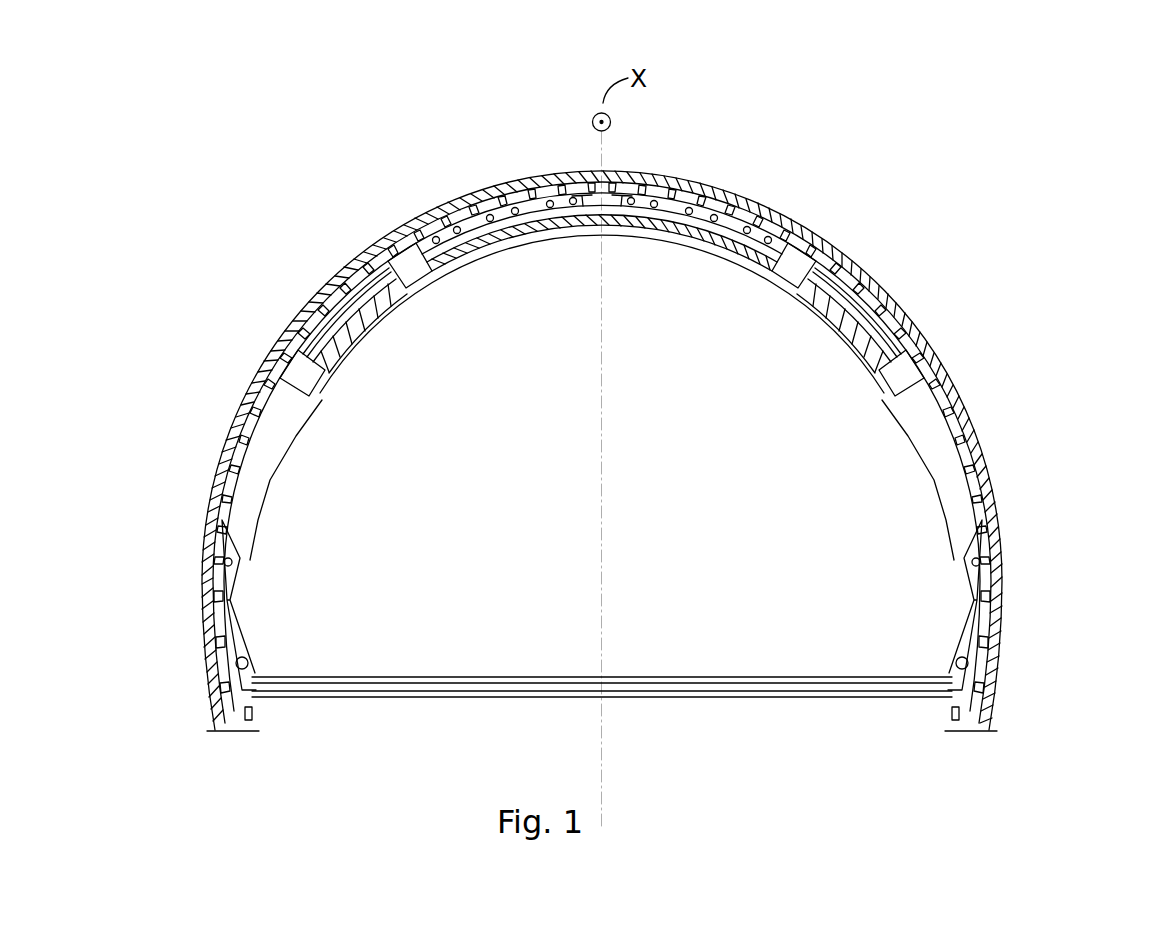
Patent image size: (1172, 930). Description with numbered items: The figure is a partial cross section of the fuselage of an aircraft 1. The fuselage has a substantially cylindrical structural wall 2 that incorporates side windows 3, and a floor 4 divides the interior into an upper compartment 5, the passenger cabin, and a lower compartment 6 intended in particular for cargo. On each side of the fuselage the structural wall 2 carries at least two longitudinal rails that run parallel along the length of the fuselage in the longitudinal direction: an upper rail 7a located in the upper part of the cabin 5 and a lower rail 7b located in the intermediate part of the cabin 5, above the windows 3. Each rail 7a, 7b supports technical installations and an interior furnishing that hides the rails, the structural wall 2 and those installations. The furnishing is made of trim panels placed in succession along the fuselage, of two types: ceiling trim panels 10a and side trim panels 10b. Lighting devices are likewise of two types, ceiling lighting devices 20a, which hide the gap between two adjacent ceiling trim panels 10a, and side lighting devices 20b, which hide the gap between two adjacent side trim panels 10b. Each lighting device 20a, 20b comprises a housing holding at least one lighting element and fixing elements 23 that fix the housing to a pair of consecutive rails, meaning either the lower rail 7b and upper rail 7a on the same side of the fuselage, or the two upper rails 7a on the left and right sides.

The aircraft 1 is at (680, 157).
The structural wall 2 is at (867, 273).
The side windows 3 is at (208, 468).
The floor 4 is at (782, 692).
The upper compartment 5 is at (716, 592).
The lower compartment 6 is at (650, 752).
The upper rail 7a is at (387, 273).
The lower rail 7b is at (290, 375).
The ceiling trim panels 10a is at (492, 235).
The side trim panels 10b is at (320, 397).
The ceiling lighting devices 20a is at (530, 180).
The side lighting devices 20b is at (325, 310).
The fixing elements 23 is at (353, 267).